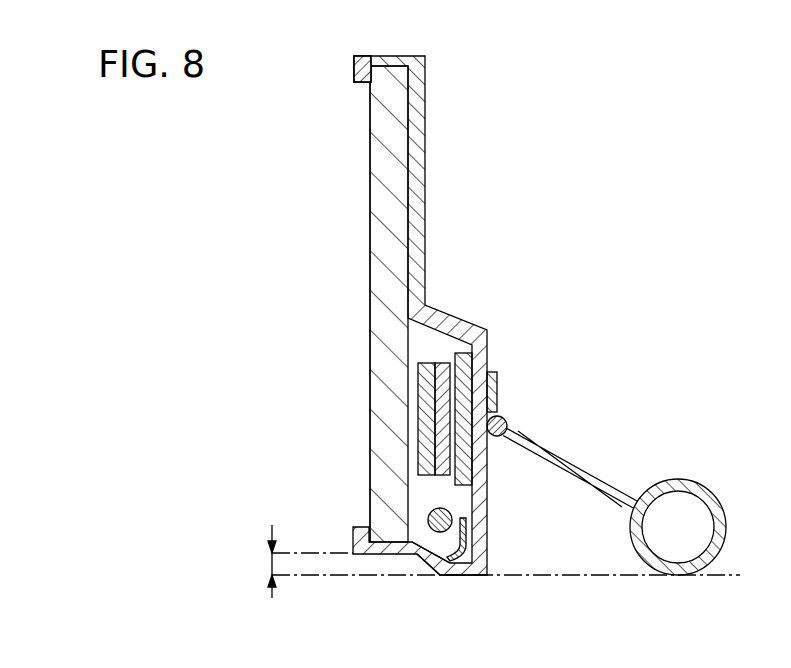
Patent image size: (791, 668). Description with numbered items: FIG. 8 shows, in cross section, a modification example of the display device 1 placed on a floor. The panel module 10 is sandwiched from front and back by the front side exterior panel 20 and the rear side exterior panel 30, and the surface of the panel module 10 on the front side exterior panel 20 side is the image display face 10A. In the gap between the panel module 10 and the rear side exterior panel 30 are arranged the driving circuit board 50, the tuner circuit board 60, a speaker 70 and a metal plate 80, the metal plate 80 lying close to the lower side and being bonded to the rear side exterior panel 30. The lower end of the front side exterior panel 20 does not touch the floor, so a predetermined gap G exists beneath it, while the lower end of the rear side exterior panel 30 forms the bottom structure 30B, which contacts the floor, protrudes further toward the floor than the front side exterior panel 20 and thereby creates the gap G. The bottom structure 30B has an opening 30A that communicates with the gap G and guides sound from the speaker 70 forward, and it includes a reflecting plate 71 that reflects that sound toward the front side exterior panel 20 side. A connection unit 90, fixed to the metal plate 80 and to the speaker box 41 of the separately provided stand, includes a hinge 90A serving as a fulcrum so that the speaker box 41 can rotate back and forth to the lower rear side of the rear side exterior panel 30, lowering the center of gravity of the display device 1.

The display device 1 is at (596, 146).
The panel module 10 is at (382, 287).
The image display face 10A is at (370, 202).
The front side exterior panel 20 is at (363, 72).
The rear side exterior panel 30 is at (420, 63).
The opening 30A is at (423, 560).
The bottom structure 30B is at (492, 562).
The speaker box 41 is at (720, 518).
The driving circuit board 50 is at (427, 367).
The tuner circuit board 60 is at (442, 367).
The speaker 70 is at (430, 523).
The reflecting plate 71 is at (462, 562).
The metal plate 80 is at (467, 363).
The connection unit 90 is at (605, 483).
The hinge 90A is at (503, 417).
The gap G is at (493, 561).